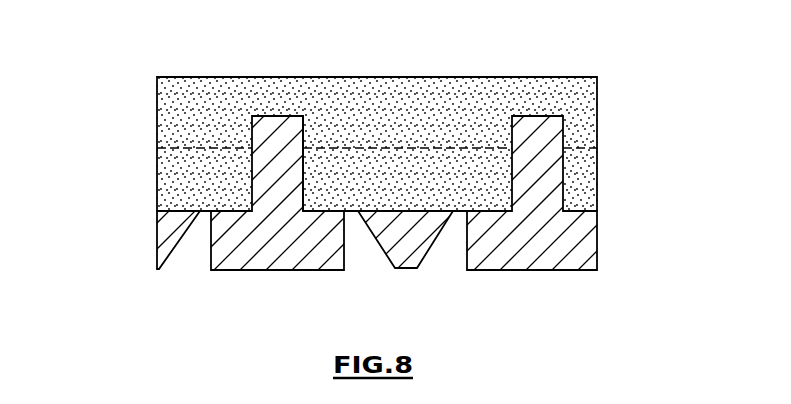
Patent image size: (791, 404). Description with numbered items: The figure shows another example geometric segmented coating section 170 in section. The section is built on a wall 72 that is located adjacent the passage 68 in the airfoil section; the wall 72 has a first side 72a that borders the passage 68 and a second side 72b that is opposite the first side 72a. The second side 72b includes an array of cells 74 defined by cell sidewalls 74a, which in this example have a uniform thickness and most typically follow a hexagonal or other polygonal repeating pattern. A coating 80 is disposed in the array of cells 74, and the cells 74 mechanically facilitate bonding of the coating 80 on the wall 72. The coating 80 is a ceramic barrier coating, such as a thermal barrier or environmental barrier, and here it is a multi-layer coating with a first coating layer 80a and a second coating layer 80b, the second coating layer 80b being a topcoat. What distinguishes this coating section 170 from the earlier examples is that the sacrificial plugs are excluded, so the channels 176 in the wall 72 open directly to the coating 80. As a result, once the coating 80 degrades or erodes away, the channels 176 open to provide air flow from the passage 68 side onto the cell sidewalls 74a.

The passage 68 is at (365, 327).
The wall 72 is at (237, 275).
The first side 72a is at (497, 270).
The second side 72b is at (168, 213).
The array of cells 74 is at (381, 128).
The cell sidewalls 74a is at (304, 131).
The coating 80 is at (208, 68).
The first coating layer 80a is at (588, 182).
The second coating layer 80b is at (588, 111).
The geometric segmented coating section 170 is at (131, 247).
The channels 176 is at (451, 258).